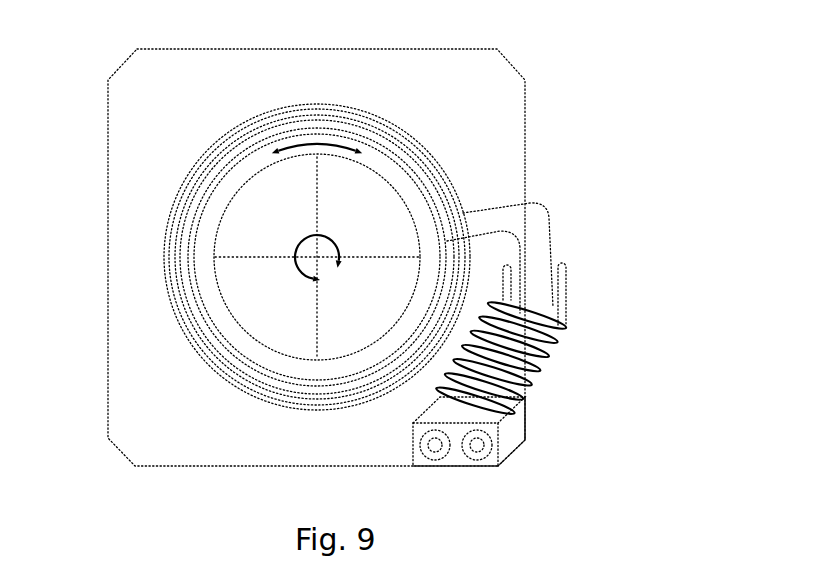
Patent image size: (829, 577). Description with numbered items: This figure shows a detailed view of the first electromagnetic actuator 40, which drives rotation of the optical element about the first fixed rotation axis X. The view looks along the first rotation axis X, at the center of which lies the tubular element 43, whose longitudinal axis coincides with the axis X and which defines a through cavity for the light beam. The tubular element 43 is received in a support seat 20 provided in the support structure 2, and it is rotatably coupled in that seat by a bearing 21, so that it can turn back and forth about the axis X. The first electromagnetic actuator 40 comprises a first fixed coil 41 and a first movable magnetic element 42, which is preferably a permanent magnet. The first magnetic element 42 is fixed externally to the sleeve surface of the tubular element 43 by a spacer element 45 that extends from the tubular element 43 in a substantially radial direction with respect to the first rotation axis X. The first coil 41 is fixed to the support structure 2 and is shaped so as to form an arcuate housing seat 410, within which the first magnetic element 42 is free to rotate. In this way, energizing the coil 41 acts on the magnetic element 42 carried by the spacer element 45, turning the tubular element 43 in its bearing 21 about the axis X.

The support structure 2 is at (488, 72).
The support seat 20 is at (317, 102).
The bearing 21 is at (367, 127).
The first rotation axis x is at (316, 255).
The tubular element 43 is at (205, 292).
The first electromagnetic actuator 40 is at (655, 340).
The spacer element 45 is at (492, 212).
The first movable magnetic element 42 is at (540, 262).
The first fixed coil 41 is at (540, 387).
The arcuate housing seat 410 is at (477, 413).